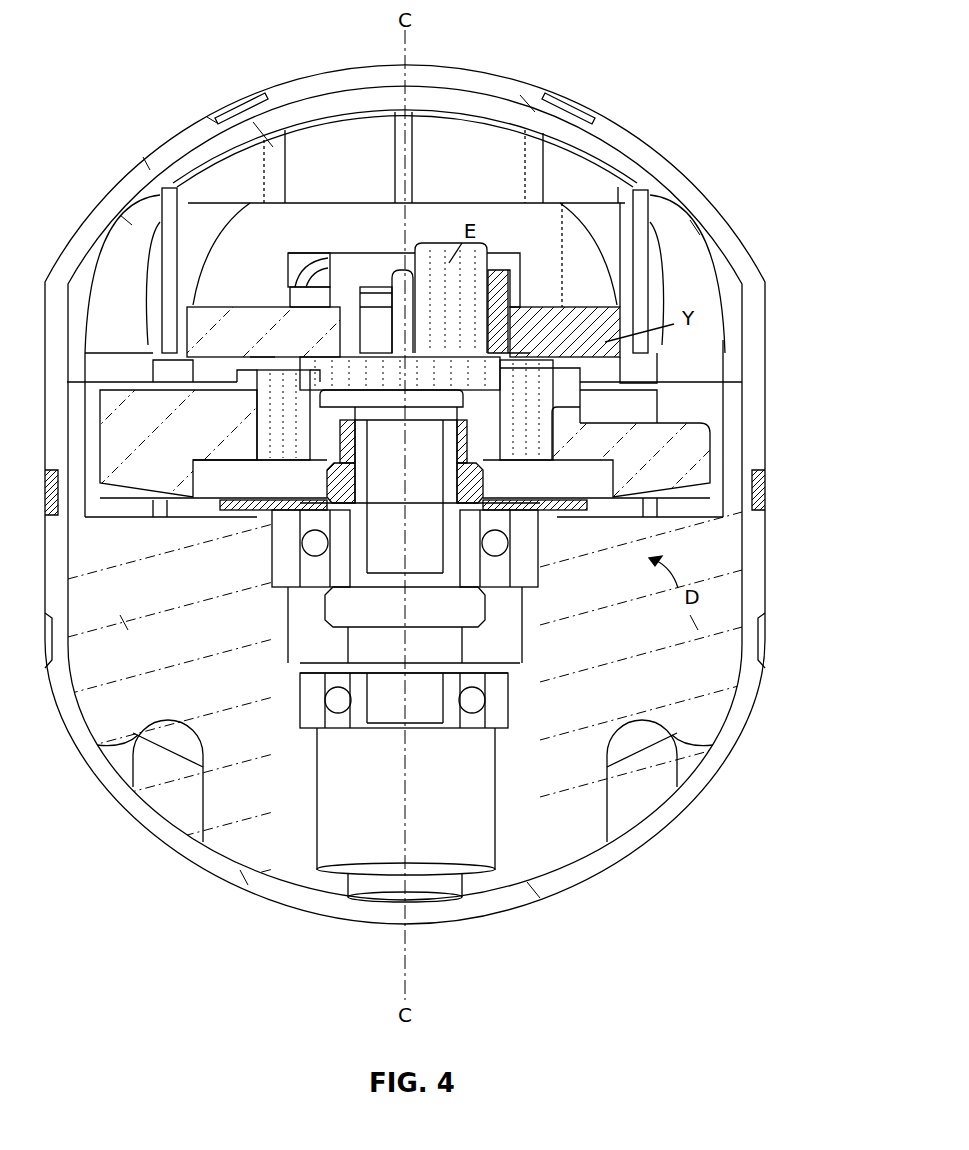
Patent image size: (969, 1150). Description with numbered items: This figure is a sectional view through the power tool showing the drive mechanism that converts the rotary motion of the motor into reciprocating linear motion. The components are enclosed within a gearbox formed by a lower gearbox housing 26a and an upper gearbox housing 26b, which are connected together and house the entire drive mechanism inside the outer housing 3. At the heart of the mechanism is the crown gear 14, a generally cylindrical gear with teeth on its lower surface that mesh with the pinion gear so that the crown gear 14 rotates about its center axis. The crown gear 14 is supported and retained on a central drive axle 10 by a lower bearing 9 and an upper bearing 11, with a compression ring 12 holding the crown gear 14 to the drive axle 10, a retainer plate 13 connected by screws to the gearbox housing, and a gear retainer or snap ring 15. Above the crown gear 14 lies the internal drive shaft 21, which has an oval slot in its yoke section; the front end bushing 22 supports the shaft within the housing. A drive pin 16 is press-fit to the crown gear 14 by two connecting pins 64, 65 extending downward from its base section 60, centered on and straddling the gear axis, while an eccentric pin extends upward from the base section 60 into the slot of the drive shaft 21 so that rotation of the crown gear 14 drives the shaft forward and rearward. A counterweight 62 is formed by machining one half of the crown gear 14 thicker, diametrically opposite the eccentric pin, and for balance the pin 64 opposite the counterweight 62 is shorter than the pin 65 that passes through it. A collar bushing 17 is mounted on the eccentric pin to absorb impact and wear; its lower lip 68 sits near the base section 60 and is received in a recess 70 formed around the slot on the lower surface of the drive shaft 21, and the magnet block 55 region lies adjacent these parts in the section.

The housing shell 3 is at (733, 257).
The upper gearbox housing 26b is at (697, 240).
The lower gearbox housing 26a is at (707, 733).
The front end bushing 22 is at (327, 288).
The collar bushing 17 is at (373, 282).
The drive pin 16 is at (408, 290).
The internal drive shaft 21 is at (613, 317).
The magnet block 55 is at (283, 342).
The recess 70 is at (262, 357).
The lip 68 is at (381, 357).
The base section 60 is at (478, 395).
The connecting pin 64 is at (509, 436).
The connecting pin 65 is at (269, 439).
The counterweight 62 is at (156, 420).
The gear retainer/snap ring 15 is at (463, 407).
The crown gear 14 is at (697, 448).
The retainer plate 13 is at (583, 506).
The compression ring 12 is at (323, 503).
The upper bearing 11 is at (538, 556).
The drive axle 10 is at (470, 608).
The lower bearing 9 is at (505, 700).